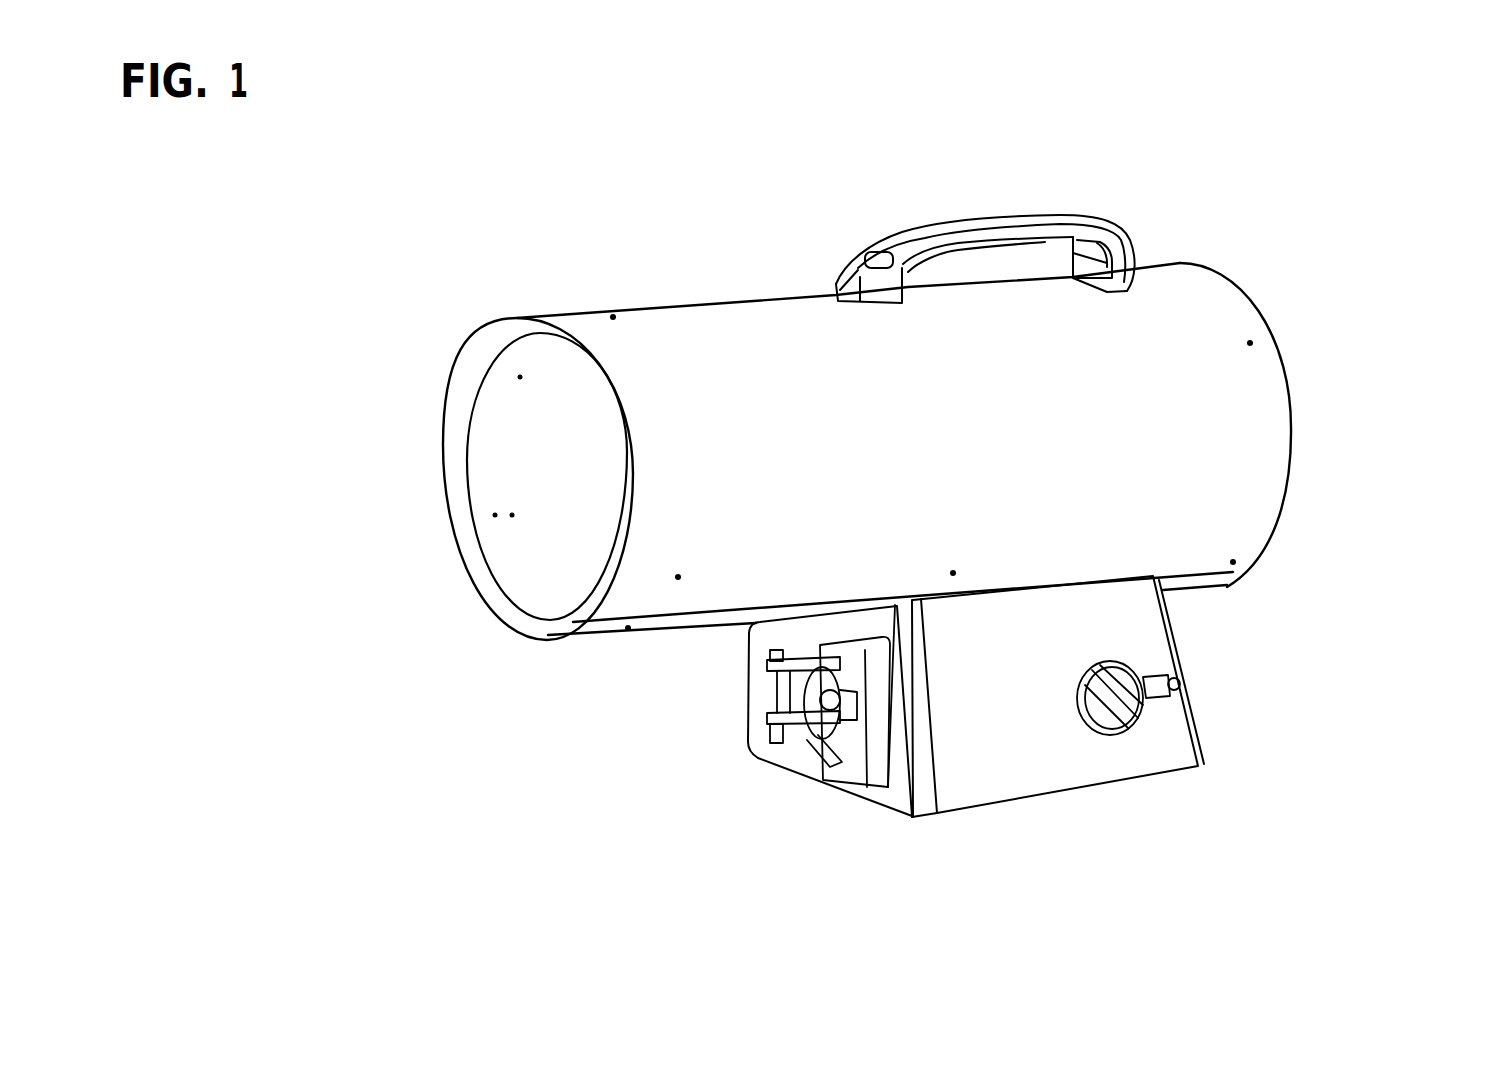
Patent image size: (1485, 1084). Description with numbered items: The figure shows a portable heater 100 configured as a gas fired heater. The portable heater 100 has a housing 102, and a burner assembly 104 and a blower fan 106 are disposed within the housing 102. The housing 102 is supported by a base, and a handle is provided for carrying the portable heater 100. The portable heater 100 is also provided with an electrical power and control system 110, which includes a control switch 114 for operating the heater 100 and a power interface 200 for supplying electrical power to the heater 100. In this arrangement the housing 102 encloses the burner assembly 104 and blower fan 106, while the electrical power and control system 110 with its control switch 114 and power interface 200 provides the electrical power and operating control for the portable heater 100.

The portable heater 100 is at (1316, 702).
The housing 102 is at (630, 343).
The burner assembly 104 is at (588, 474).
The blower fan 106 is at (1010, 727).
The electrical power and control system 110 is at (1037, 213).
The control switch 114 is at (1147, 674).
The power interface 200 is at (767, 752).